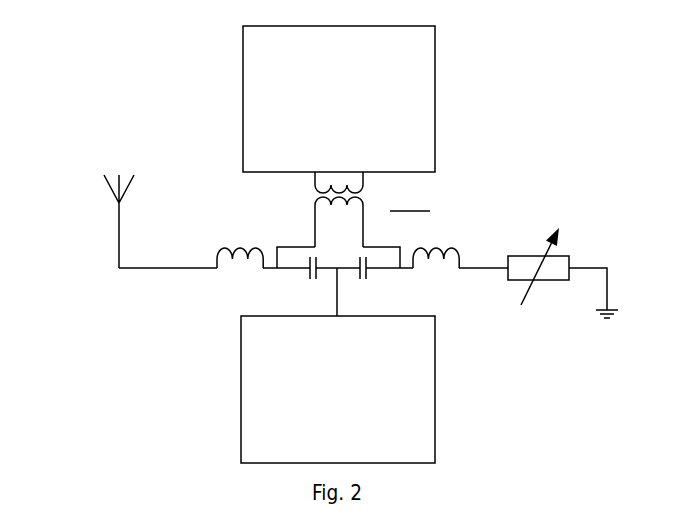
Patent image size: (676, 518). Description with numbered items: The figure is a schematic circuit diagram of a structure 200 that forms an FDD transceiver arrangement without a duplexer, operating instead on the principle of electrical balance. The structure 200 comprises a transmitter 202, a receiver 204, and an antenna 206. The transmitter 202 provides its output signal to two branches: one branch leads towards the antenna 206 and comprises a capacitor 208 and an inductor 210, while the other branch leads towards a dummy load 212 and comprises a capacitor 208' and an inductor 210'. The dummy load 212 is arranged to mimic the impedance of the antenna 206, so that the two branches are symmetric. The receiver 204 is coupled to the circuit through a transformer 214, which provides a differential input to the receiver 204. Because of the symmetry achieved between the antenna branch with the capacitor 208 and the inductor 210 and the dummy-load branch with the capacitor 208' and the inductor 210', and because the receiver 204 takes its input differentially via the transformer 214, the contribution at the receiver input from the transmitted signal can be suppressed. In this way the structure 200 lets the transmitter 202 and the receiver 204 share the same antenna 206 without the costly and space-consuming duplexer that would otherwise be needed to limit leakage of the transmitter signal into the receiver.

The structure 200 is at (320, 244).
The transmitter 202 is at (257, 339).
The receiver 204 is at (257, 132).
The antenna 206 is at (119, 205).
The capacitor 208 is at (279, 280).
The capacitor 208' is at (399, 279).
The inductor 210 is at (209, 276).
The inductor 210' is at (461, 285).
The dummy load 212 is at (547, 273).
The transformer 214 is at (330, 187).